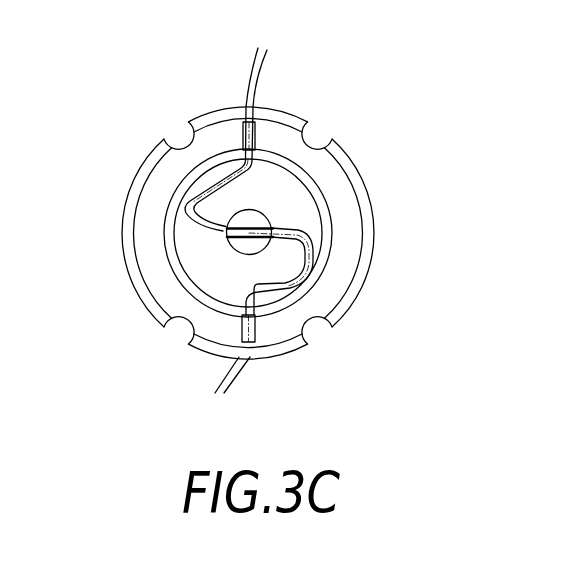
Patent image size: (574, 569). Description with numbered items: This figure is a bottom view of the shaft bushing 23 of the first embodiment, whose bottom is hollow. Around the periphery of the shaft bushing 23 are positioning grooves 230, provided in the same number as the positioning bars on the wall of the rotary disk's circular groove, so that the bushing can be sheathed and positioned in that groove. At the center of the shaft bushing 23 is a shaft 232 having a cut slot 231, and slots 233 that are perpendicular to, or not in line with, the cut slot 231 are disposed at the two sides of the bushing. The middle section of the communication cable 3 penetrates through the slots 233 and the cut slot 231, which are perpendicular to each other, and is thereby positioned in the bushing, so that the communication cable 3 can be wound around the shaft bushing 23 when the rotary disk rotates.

The communication cable 3 is at (252, 103).
The shaft bushing 23 is at (287, 118).
The positioning groove 230 is at (177, 131).
The cut slot 231 is at (267, 222).
The shaft 232 is at (258, 218).
The slots 233 is at (241, 133).